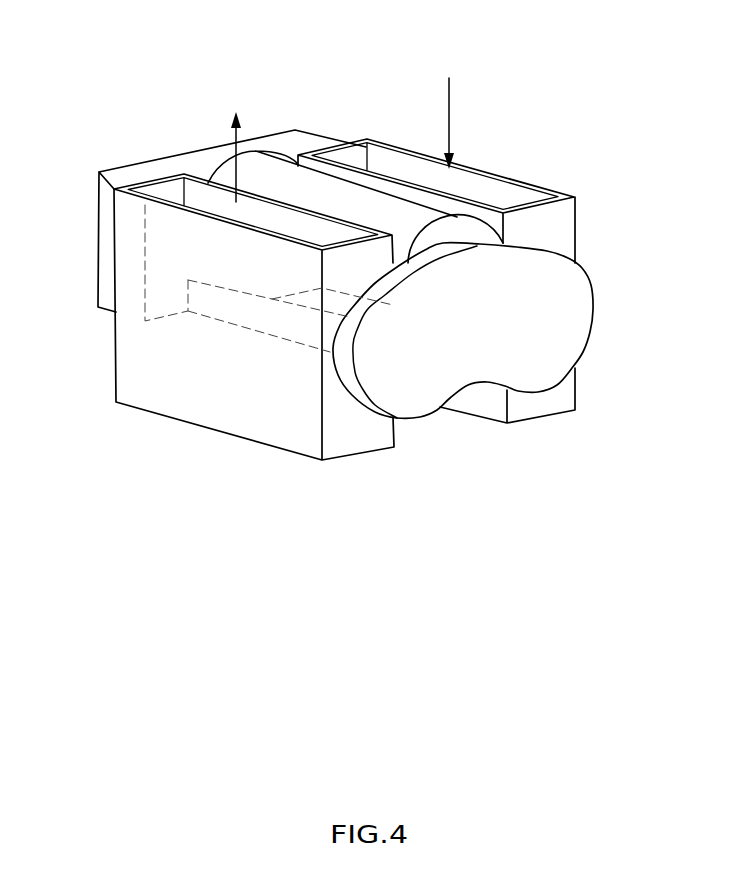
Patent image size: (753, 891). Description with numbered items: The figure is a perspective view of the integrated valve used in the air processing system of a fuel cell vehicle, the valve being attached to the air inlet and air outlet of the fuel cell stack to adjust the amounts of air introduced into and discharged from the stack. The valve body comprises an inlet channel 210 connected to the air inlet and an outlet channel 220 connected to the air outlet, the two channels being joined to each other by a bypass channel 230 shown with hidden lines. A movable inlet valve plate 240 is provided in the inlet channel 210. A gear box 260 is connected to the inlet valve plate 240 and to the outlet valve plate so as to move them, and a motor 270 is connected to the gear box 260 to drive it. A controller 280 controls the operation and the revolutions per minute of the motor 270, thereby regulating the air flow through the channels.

The inlet channel 210 is at (157, 204).
The outlet channel 220 is at (576, 207).
The bypass channel 230 is at (295, 342).
The inlet valve plate 240 is at (270, 296).
The gear box 260 is at (527, 360).
The motor 270 is at (257, 177).
The controller 280 is at (203, 157).